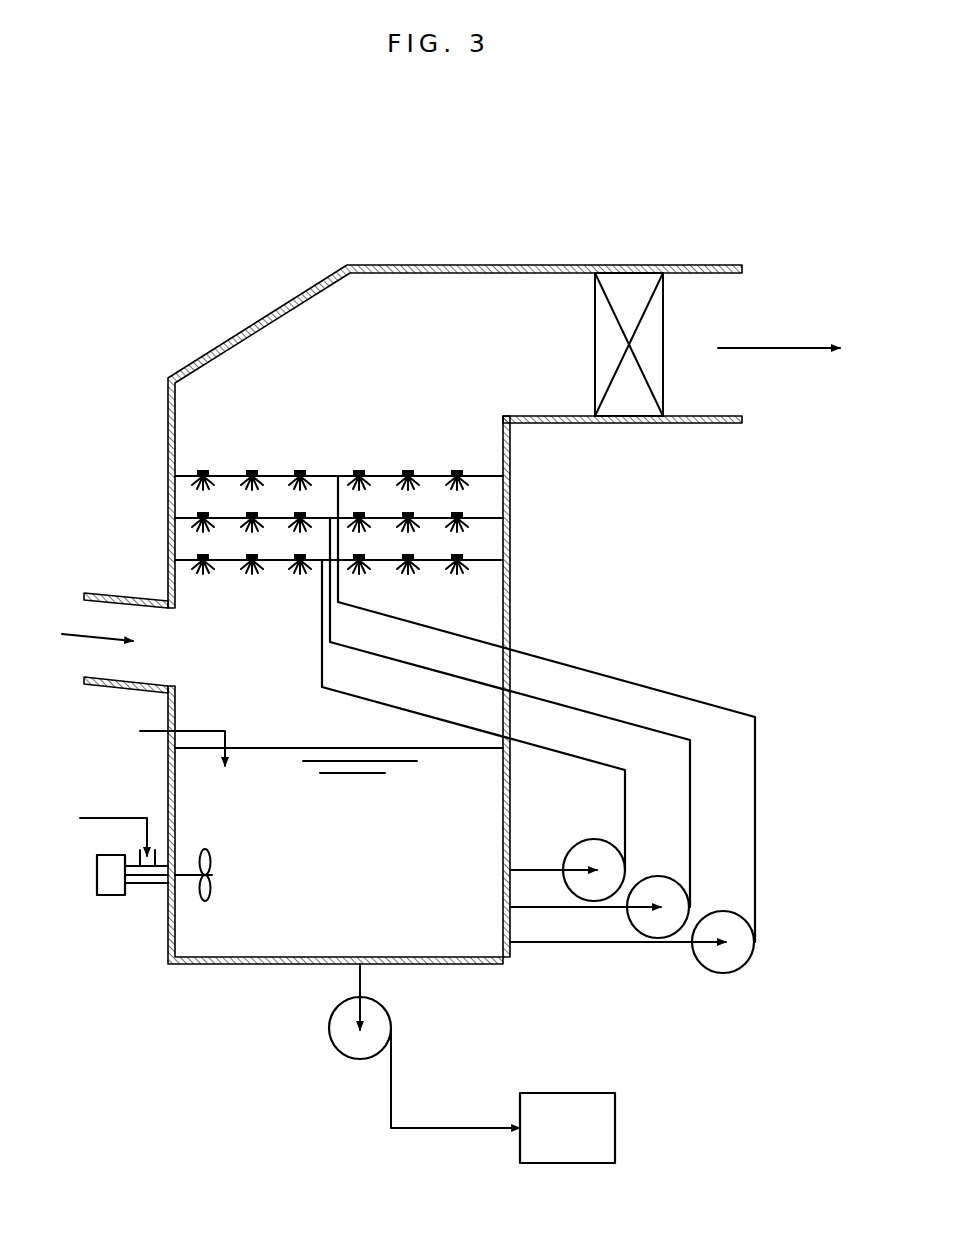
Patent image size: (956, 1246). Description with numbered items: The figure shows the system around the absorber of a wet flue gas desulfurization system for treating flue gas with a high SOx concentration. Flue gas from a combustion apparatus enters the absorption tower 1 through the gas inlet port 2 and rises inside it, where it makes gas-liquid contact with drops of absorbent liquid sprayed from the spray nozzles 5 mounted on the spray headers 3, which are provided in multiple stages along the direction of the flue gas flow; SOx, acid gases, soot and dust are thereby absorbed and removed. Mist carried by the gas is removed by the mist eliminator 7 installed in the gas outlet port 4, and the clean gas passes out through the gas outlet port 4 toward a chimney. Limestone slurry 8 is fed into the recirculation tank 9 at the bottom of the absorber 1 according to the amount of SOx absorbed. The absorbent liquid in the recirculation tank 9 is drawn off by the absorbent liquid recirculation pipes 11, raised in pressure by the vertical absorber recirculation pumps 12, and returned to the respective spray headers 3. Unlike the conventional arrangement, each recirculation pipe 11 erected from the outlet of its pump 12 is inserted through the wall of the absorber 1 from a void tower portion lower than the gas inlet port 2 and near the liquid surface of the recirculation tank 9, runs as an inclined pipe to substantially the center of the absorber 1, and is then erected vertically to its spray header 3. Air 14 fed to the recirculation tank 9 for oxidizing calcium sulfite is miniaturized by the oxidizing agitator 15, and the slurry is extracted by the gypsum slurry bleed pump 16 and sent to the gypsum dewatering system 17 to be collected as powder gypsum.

The absorption tower 1 is at (168, 413).
The gas inlet port 2 is at (100, 660).
The spray header 3 is at (380, 476).
The gas outlet port 4 is at (712, 295).
The spray nozzle 5 is at (258, 476).
The mist eliminator 7 is at (625, 283).
The limestone slurry 8 is at (155, 733).
The recirculation tank 9 is at (233, 940).
The absorbent liquid recirculation pipe 11 is at (658, 686).
The absorber recirculation pump 12 is at (736, 970).
The air 14 is at (93, 815).
The oxidizing agitator 15 is at (95, 878).
The gypsum slurry bleed pump 16 is at (342, 1027).
The gypsum dewatering system 17 is at (550, 1092).